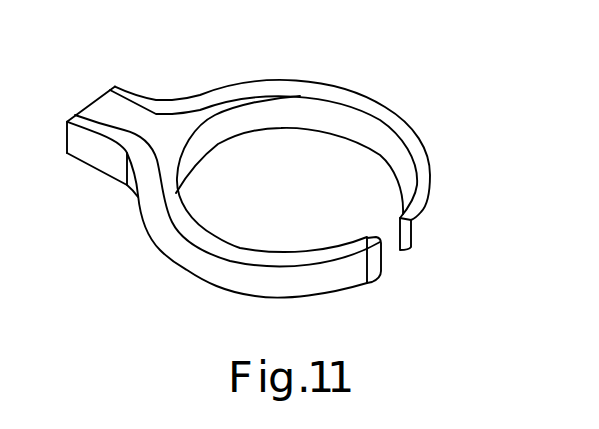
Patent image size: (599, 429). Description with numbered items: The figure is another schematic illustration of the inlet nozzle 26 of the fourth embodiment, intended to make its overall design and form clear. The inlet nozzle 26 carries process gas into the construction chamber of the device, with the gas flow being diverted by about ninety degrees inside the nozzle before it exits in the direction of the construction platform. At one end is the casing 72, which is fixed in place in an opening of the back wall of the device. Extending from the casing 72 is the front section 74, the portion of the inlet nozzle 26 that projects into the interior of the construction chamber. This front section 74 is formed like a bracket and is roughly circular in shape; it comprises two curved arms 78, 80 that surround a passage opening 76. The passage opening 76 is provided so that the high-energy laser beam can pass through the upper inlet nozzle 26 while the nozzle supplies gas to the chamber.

The inlet nozzle 26 is at (114, 235).
The casing 72 is at (177, 101).
The front section 74 is at (410, 95).
The passage opening 76 is at (304, 204).
The curved arm 78 is at (343, 253).
The curved arm 80 is at (421, 177).